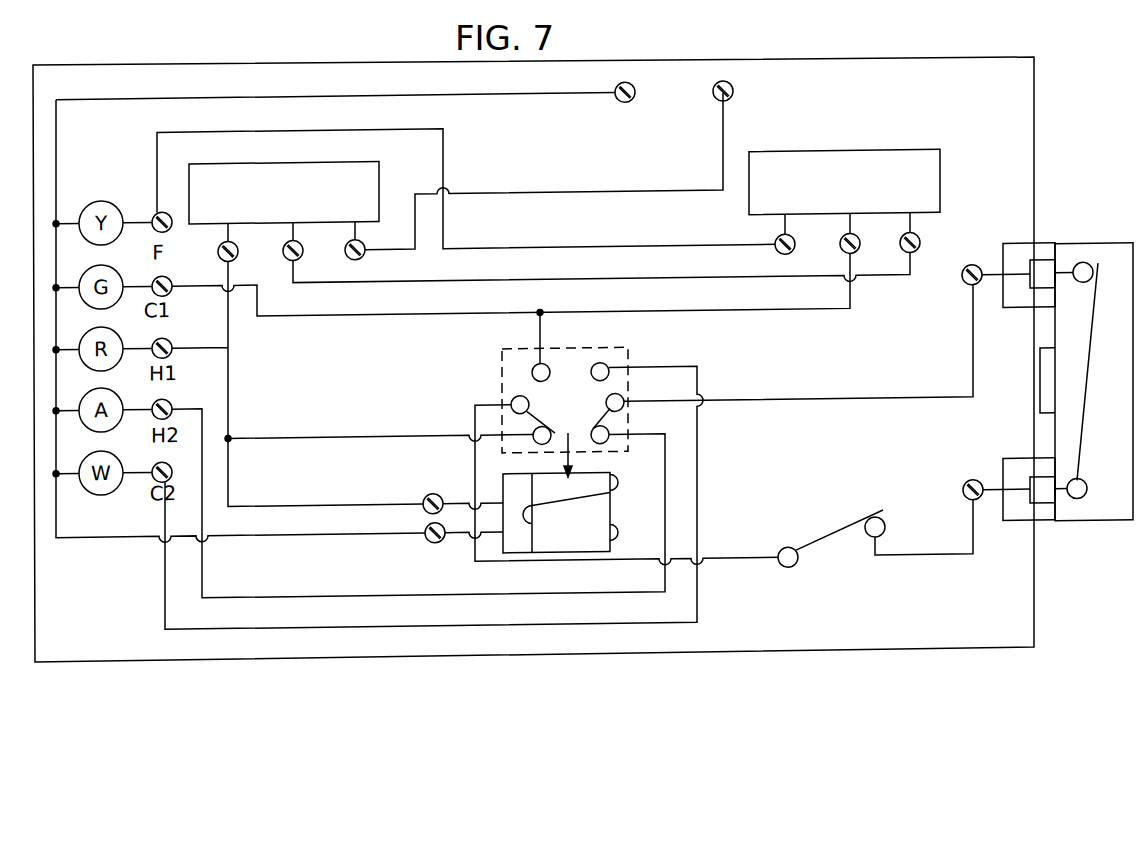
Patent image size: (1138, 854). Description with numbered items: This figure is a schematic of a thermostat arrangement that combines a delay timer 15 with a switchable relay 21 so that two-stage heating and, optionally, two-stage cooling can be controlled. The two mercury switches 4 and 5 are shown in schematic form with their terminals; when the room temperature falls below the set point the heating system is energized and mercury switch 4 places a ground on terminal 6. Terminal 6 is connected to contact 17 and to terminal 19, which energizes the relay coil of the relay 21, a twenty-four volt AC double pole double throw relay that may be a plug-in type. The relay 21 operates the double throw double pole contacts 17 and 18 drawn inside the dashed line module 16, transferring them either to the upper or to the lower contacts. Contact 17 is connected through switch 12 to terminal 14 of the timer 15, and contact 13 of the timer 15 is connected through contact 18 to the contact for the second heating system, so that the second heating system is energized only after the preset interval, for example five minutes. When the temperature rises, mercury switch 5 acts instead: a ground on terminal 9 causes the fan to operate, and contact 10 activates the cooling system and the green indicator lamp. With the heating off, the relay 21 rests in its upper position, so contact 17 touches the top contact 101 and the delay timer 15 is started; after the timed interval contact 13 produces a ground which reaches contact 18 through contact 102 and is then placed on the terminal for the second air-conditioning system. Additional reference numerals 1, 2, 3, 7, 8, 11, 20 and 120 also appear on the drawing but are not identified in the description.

The terminal 1 is at (633, 105).
The terminal 2 is at (731, 105).
The subbase housing 3 is at (1034, 147).
The mercury switch 4 is at (311, 166).
The mercury switch 5 is at (859, 161).
The terminal 6 is at (238, 255).
The MOP terminal of first unit 7 is at (303, 254).
The COM terminal of first unit 8 is at (361, 263).
The terminal 9 is at (792, 263).
The contact 10 is at (856, 265).
The COM terminal of second unit 11 is at (920, 255).
The switch 12 is at (885, 540).
The timer contact 13 is at (962, 292).
The timer terminal 14 is at (965, 495).
The delay timer 15 is at (1068, 382).
The dashed line module 16 is at (629, 371).
The contact 17 is at (504, 402).
The contact 18 is at (606, 411).
The terminal 19 is at (431, 501).
The terminal 20 is at (428, 546).
The relay 21 is at (614, 511).
The top contact 101 is at (550, 381).
The contact 102 is at (601, 370).
The relay armature 120 is at (1084, 449).